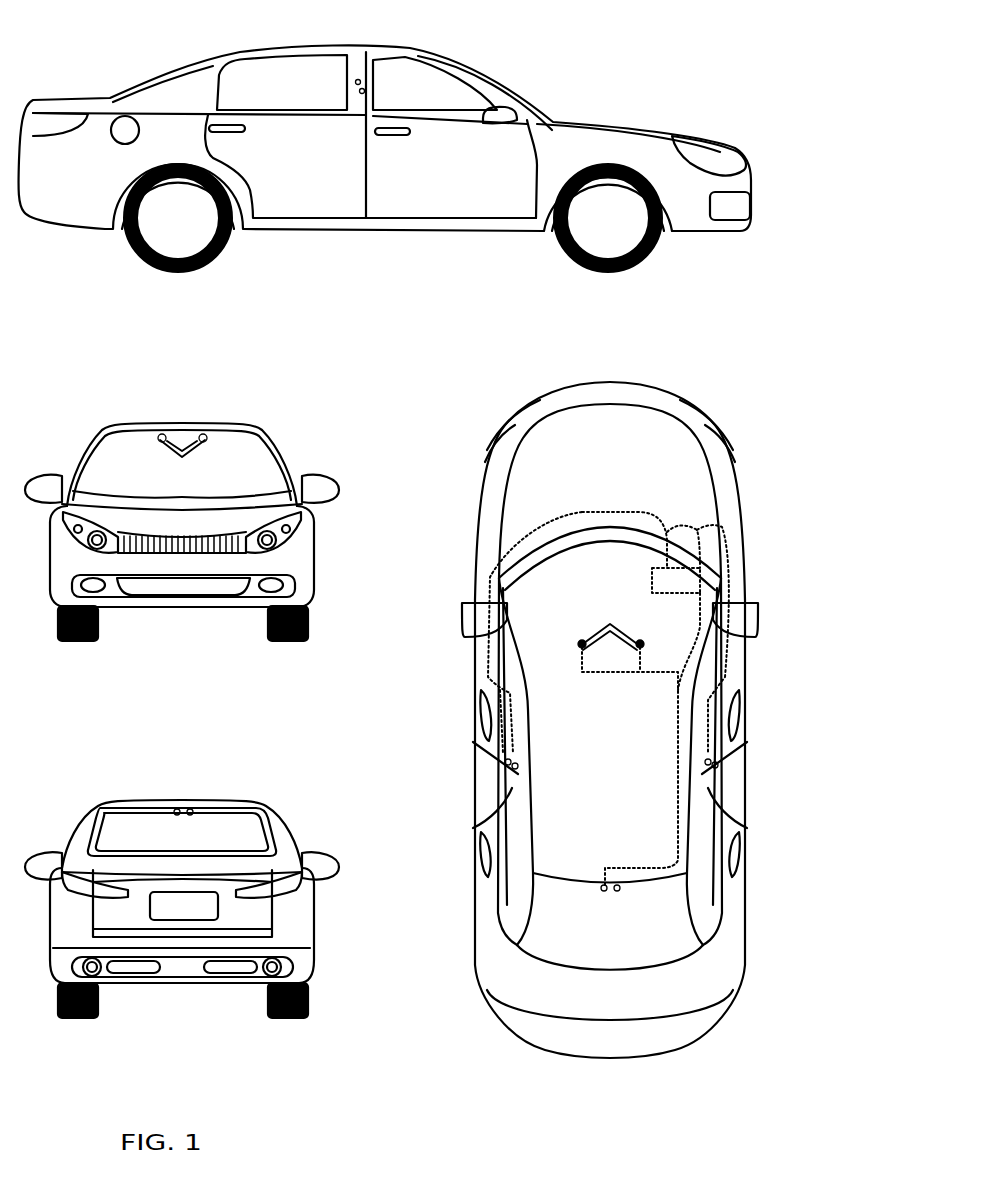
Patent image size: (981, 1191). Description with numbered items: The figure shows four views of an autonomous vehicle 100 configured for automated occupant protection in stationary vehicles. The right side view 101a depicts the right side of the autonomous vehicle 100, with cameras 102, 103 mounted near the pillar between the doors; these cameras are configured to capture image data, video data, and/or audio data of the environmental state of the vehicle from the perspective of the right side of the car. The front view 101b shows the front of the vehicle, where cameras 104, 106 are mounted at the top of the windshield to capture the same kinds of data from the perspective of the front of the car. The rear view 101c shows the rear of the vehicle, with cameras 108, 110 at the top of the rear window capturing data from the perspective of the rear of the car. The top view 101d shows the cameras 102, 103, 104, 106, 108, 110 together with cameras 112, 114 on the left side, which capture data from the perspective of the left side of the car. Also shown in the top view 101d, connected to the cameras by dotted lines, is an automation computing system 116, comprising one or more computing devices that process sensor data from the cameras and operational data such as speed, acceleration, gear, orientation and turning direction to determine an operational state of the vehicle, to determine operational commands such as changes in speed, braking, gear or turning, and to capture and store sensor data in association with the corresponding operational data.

The autonomous vehicle 100 is at (424, 539).
The right side view 101a is at (625, 67).
The front view 101b is at (319, 411).
The rear view 101c is at (289, 792).
The top view 101d is at (764, 456).
The camera 102 is at (366, 92).
The camera 103 is at (362, 81).
The camera 104 is at (162, 434).
The camera 106 is at (204, 434).
The camera 108 is at (177, 809).
The camera 110 is at (190, 809).
The camera 112 is at (509, 765).
The camera 114 is at (516, 769).
The automation computing system 116 is at (683, 567).